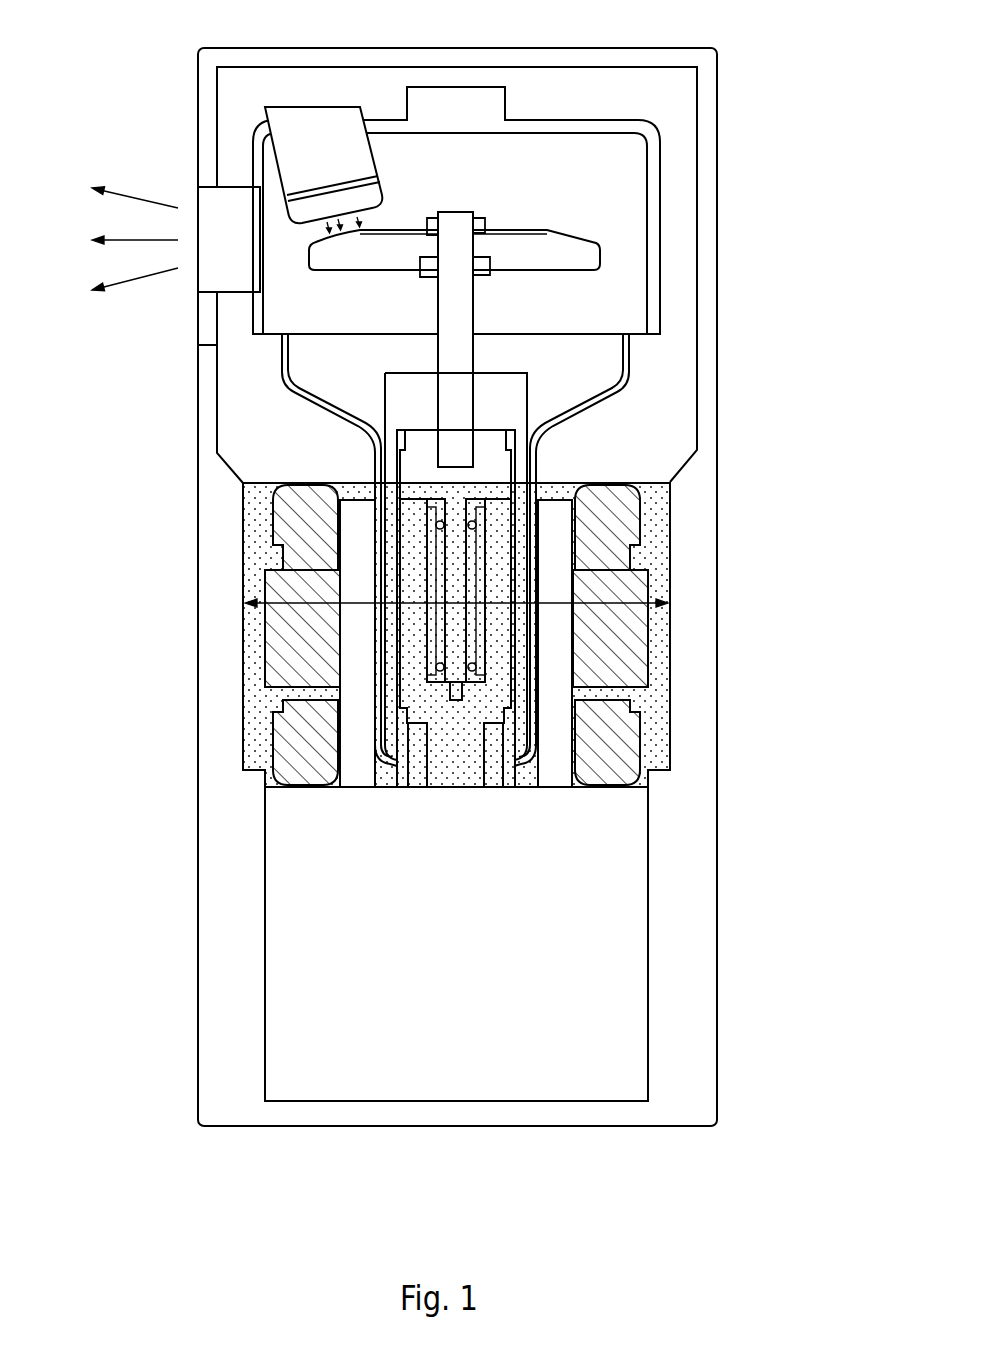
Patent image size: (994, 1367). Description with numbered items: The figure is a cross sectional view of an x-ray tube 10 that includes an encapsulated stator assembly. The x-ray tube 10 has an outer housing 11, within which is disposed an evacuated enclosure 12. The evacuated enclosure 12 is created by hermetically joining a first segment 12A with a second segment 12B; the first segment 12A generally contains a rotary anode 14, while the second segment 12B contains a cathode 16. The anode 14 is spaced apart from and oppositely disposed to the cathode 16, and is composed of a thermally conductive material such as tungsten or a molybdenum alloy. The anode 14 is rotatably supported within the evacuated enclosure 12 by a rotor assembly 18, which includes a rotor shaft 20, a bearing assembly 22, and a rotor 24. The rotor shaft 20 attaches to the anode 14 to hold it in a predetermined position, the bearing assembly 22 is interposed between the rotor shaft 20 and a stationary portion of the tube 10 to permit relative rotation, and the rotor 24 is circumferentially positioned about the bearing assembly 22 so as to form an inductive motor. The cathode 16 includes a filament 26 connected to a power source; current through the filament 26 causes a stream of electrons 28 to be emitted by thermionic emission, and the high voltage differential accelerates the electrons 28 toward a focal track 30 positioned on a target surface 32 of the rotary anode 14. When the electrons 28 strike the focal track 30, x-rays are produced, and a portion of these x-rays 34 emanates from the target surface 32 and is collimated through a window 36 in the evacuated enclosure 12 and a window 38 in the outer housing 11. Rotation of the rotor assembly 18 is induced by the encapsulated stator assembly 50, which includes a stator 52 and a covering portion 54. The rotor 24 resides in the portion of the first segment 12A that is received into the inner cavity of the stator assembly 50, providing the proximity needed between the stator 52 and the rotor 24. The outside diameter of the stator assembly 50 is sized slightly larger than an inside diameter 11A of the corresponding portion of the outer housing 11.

The x-ray tube 10 is at (148, 62).
The outer housing 11 is at (720, 140).
The inside diameter 11A is at (620, 607).
The evacuated enclosure 12 is at (673, 215).
The first segment 12A is at (662, 296).
The second segment 12B is at (603, 410).
The rotary anode 14 is at (552, 272).
The cathode 16 is at (385, 160).
The rotor assembly 18 is at (380, 402).
The rotor shaft 20 is at (476, 312).
The bearing assembly 22 is at (487, 553).
The rotor 24 is at (388, 696).
The filament 26 is at (382, 188).
The electrons 28 is at (353, 214).
The focal track 30 is at (577, 232).
The target surface 32 is at (509, 230).
The x-rays 34 is at (136, 193).
The window 36 is at (272, 248).
The window 38 is at (195, 270).
The encapsulated stator assembly 50 is at (233, 542).
The stator 52 is at (267, 628).
The covering portion 54 is at (657, 725).